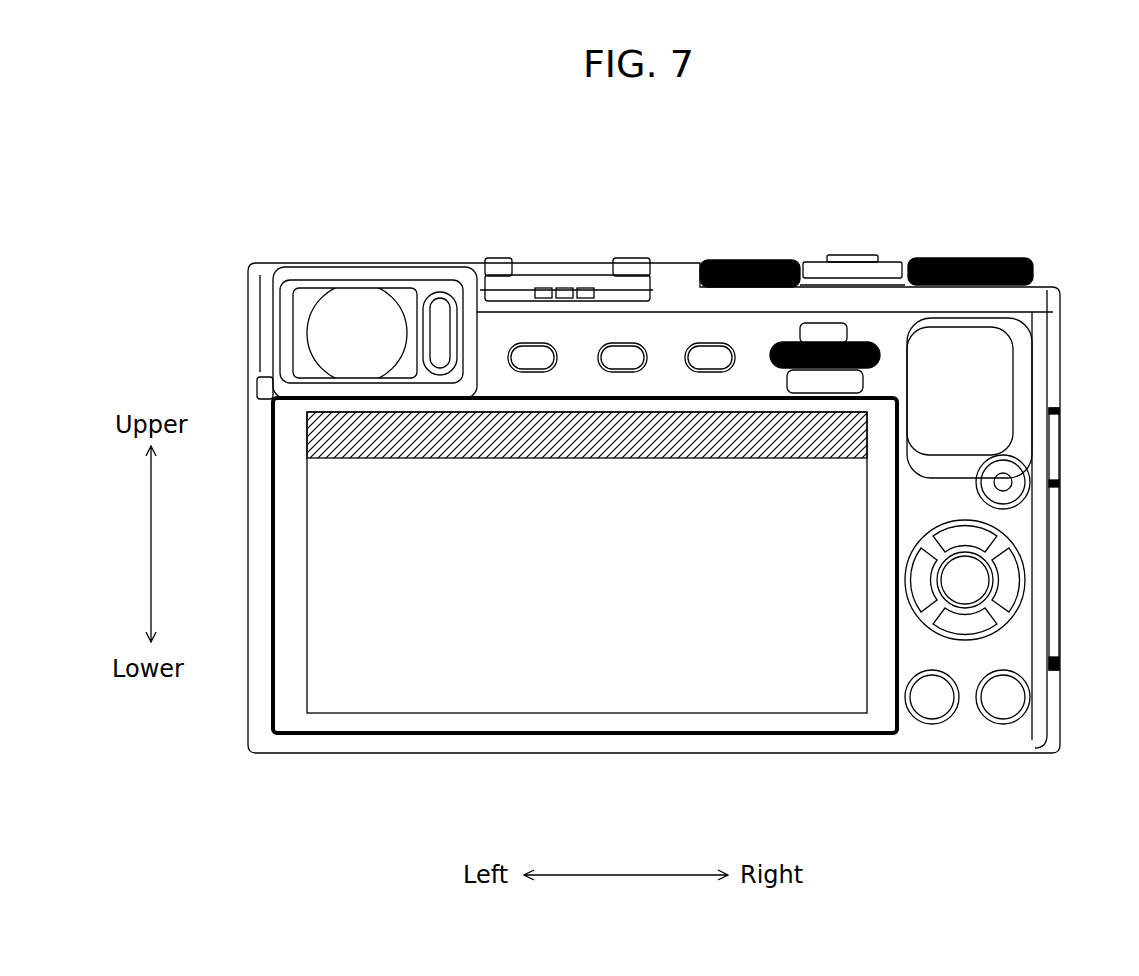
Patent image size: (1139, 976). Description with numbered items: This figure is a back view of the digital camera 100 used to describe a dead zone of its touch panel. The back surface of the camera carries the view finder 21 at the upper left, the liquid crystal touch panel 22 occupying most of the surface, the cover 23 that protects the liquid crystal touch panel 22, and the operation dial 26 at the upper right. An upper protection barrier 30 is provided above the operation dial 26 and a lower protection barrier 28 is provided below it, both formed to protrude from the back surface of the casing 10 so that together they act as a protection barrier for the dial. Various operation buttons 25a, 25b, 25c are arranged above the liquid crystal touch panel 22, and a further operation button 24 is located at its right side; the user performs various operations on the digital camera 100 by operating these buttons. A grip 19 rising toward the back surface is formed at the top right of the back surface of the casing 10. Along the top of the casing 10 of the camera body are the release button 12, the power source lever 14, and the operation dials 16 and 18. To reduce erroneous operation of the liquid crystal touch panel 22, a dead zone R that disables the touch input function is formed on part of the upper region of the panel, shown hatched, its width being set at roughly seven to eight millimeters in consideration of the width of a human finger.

The digital camera 100 is at (222, 204).
The casing 10 is at (953, 745).
The release button 12 is at (868, 255).
The power source lever 14 is at (805, 262).
The operation dial 16 is at (977, 258).
The operation dial 18 is at (757, 262).
The grip 19 is at (1033, 397).
The view finder 21 is at (357, 303).
The liquid crystal touch panel 22 is at (372, 735).
The cover 23 is at (662, 735).
The operation button 24 is at (1003, 617).
The operation button 25a is at (530, 343).
The operation button 25b is at (620, 343).
The operation button 25c is at (707, 343).
The operation dial 26 is at (777, 345).
The lower protection barrier 28 is at (850, 382).
The upper protection barrier 30 is at (847, 328).
The dead zone R is at (322, 437).